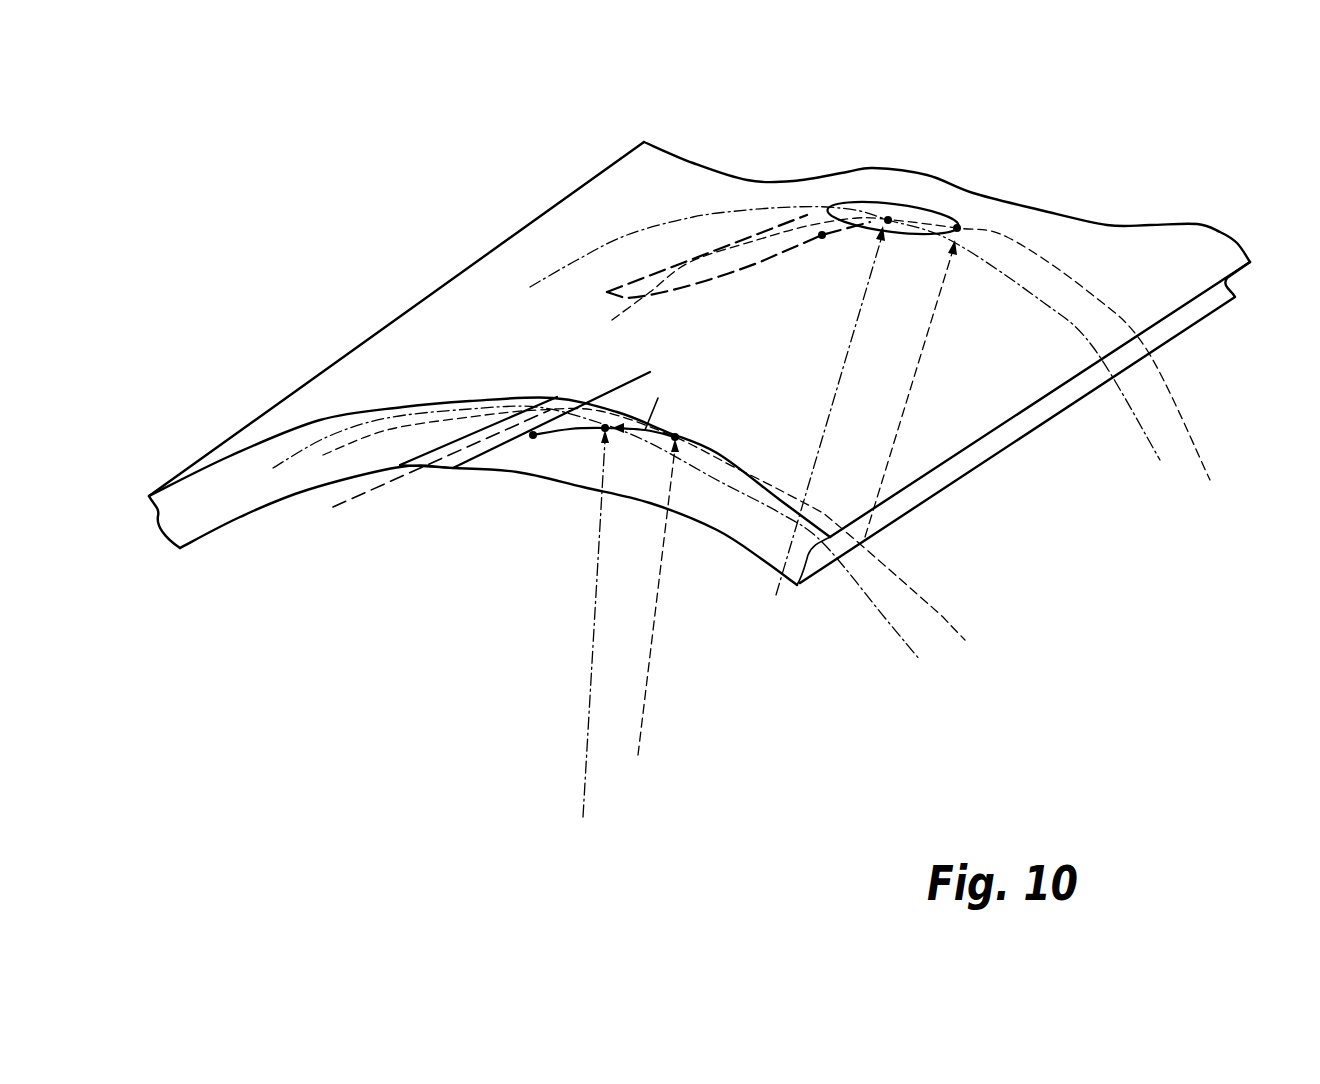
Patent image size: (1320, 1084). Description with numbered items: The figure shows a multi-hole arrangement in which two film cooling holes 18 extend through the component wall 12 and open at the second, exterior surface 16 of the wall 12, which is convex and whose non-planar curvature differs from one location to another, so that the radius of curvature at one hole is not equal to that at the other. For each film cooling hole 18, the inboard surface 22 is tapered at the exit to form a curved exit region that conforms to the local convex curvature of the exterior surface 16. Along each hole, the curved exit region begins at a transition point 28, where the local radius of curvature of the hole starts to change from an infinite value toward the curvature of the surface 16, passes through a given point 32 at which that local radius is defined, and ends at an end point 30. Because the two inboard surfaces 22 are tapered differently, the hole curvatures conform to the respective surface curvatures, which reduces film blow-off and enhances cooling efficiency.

The component wall 12 is at (240, 510).
The second (exterior) surface 16 is at (308, 414).
The film cooling hole 18 is at (722, 220).
The inboard surface 22 is at (490, 452).
The transition point 28 is at (822, 235).
The end point 30 is at (957, 228).
The given point 32 is at (888, 220).